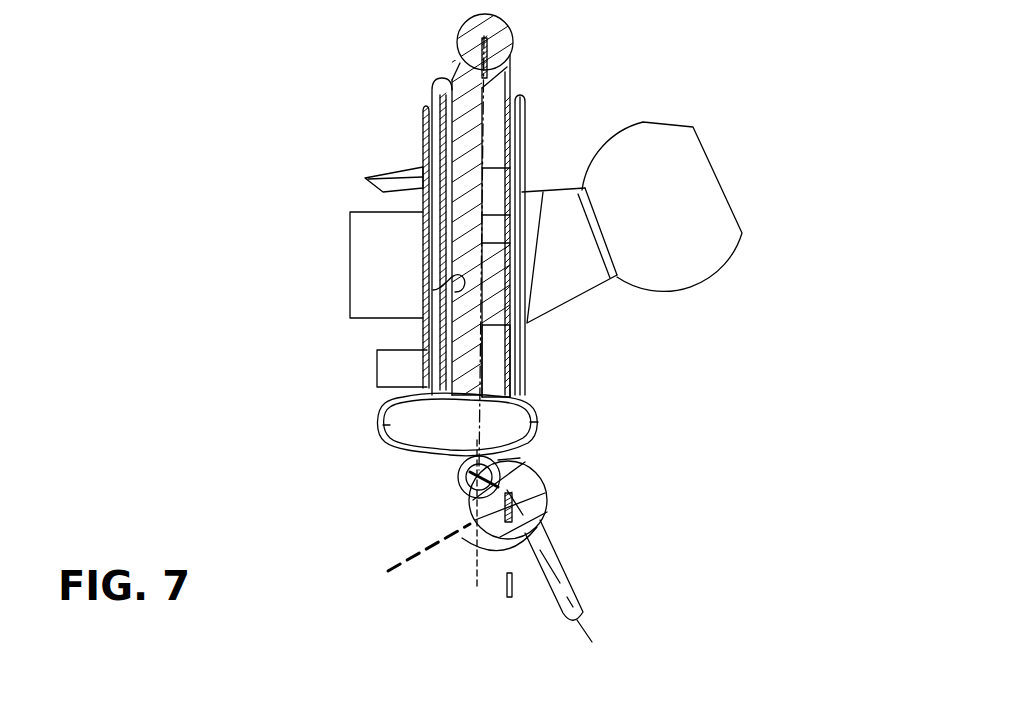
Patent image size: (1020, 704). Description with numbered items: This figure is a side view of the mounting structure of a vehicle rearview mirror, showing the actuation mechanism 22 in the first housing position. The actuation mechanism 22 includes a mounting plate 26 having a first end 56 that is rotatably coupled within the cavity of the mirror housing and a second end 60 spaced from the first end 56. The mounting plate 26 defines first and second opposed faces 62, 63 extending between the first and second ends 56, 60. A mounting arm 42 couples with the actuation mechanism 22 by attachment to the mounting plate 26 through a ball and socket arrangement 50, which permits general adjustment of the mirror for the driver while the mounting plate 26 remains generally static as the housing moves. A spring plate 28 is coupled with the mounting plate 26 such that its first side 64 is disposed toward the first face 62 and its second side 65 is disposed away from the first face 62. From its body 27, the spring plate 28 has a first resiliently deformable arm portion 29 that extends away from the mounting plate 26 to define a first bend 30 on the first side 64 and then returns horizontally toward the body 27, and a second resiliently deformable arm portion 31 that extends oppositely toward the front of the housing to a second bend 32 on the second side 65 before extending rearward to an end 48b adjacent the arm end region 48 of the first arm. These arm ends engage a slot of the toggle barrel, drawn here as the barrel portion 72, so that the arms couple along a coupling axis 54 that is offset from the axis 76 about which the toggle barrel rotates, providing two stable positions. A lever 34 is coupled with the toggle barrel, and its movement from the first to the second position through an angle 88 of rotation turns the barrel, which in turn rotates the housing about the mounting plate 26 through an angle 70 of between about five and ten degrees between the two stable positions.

The actuation mechanism 22 is at (588, 388).
The mounting plate 26 is at (465, 142).
The body 27 is at (438, 233).
The spring plate 28 is at (400, 334).
The first resiliently deformable arm portion 29 is at (420, 394).
The first bend 30 is at (383, 427).
The second resiliently deformable arm portion 31 is at (512, 457).
The second bend 32 is at (540, 422).
The lever 34 is at (565, 563).
The mounting arm 42 is at (728, 308).
The bracket strut 48 is at (570, 210).
The end of arm 48b is at (463, 482).
The ball and socket arrangement 50 is at (650, 142).
The coupling axis 54 is at (462, 462).
The first end 56 is at (497, 20).
The second end 60 is at (380, 420).
The first face 62 is at (453, 107).
The second face 63 is at (512, 160).
The first side 64 is at (422, 202).
The second side 65 is at (433, 290).
The angle 70 is at (513, 365).
The cam disc 72 is at (510, 462).
The axis 76 is at (548, 505).
The angle of rotation 88 is at (470, 548).